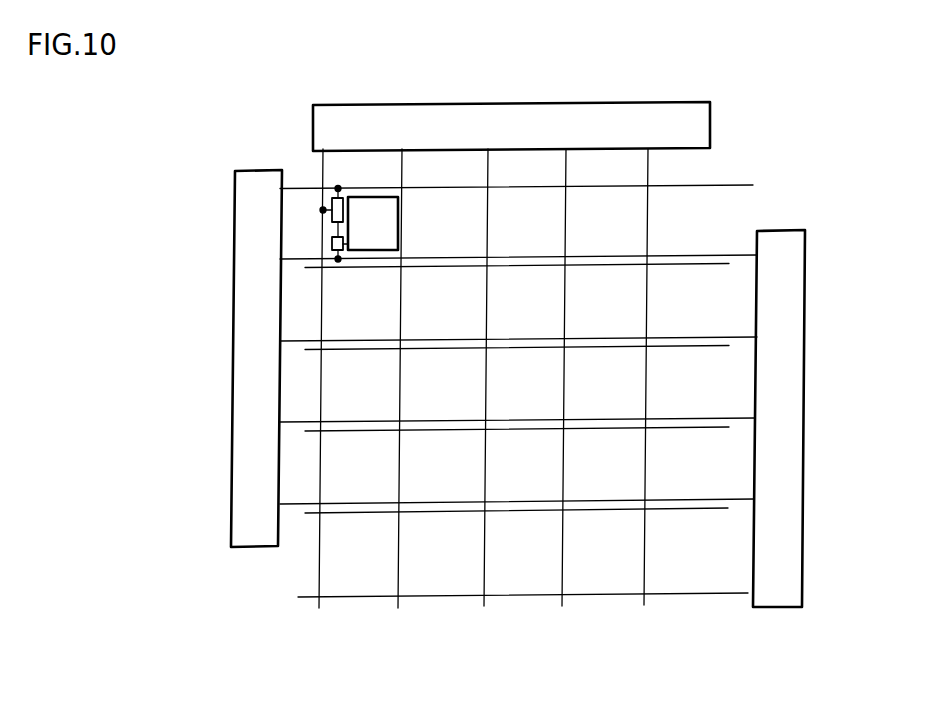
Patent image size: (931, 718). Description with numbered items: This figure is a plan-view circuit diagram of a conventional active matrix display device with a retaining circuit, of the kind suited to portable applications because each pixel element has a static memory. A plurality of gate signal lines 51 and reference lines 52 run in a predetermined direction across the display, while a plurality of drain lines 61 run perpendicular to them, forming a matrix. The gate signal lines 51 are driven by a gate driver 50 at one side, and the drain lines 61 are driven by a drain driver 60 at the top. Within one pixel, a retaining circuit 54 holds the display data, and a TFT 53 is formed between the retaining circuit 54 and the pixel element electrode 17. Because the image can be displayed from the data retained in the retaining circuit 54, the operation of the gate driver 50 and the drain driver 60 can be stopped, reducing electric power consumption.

The drain driver 60 is at (629, 118).
The gate driver 50 is at (237, 463).
The gate signal line 51 is at (302, 258).
The reference line 52 is at (693, 337).
The drain line 61 is at (398, 573).
The retaining circuit 54 is at (343, 197).
The TFT 53 is at (340, 260).
The pixel element electrode 17 is at (398, 225).